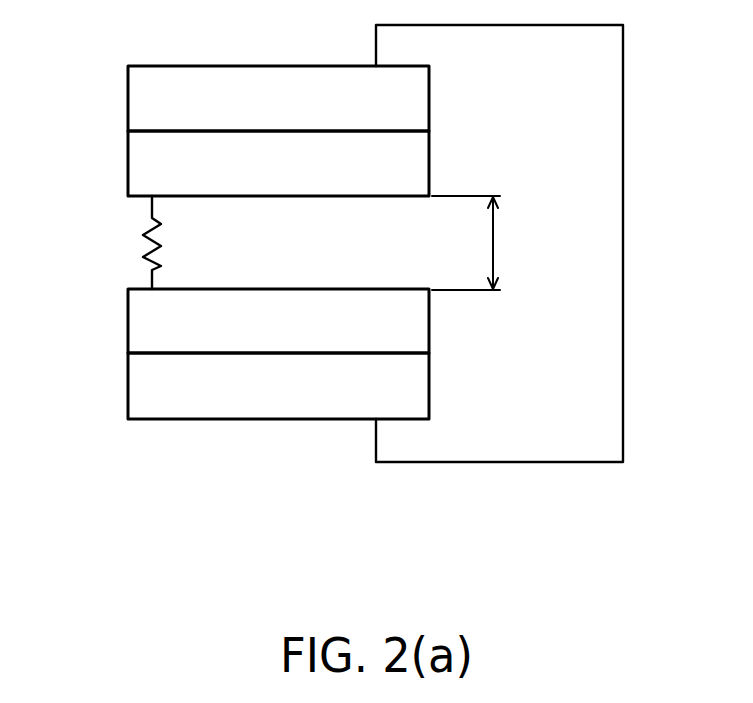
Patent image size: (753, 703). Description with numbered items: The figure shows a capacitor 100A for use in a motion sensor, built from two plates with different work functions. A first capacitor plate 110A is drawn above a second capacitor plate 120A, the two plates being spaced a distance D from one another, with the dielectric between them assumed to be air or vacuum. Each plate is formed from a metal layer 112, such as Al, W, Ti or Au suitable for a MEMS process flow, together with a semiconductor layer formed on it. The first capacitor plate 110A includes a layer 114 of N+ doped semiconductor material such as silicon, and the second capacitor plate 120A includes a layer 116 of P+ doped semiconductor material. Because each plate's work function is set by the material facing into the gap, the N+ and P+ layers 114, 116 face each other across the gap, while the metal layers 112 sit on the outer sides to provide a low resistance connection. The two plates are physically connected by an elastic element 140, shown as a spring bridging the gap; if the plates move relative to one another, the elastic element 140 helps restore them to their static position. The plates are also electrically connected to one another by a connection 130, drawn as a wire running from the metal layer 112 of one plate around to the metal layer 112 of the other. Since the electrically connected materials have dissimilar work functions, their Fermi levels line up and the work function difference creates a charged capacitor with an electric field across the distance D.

The capacitor 100A is at (520, 563).
The first capacitor plate 110A is at (300, 242).
The metal layer 112 is at (145, 98).
The N+ doped semiconductor layer 114 is at (145, 165).
The P+ doped semiconductor layer 116 is at (145, 321).
The second capacitor plate 120A is at (300, 329).
The electrical connection 130 is at (623, 66).
The elastic element 140 is at (145, 245).
The distance D is at (478, 243).